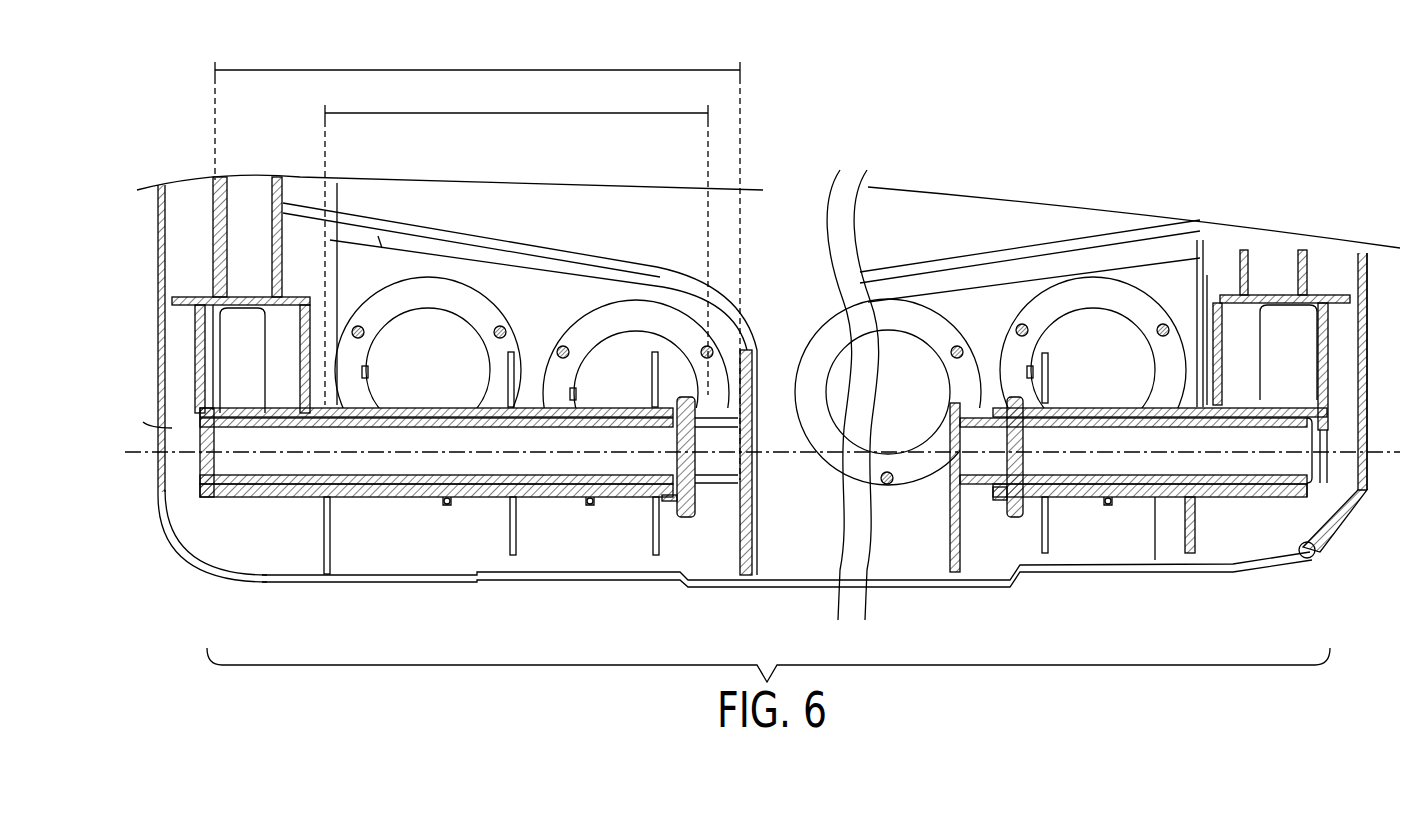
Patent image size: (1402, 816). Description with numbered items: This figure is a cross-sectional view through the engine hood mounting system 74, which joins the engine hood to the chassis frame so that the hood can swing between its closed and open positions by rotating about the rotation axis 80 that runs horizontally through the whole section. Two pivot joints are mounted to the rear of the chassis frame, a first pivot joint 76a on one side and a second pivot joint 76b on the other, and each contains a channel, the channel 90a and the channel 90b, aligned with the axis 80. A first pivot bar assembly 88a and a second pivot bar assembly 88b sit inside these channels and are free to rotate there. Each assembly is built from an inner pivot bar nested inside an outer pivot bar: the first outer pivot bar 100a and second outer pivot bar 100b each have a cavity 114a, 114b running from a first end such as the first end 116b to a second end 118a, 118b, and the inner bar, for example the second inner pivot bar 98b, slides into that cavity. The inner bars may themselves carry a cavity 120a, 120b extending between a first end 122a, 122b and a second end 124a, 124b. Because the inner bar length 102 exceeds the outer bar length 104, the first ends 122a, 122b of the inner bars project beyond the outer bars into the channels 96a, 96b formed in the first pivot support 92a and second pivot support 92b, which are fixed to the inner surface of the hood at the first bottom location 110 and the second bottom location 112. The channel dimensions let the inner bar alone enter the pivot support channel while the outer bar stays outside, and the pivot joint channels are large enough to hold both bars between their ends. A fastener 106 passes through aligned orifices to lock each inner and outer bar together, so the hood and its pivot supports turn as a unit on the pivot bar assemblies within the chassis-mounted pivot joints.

The engine hood mounting system 74 is at (1042, 88).
The first pivot joint 76a is at (514, 372).
The second pivot joint 76b is at (1050, 358).
The rotation axis 80 is at (145, 450).
The first pivot bar assembly 88a is at (465, 500).
The second pivot bar assembly 88b is at (1155, 497).
The channel of first pivot joint 90a is at (562, 446).
The channel of second pivot joint 90b is at (1107, 446).
The first pivot support 92a is at (242, 500).
The second pivot support 92b is at (1283, 492).
The channel of first pivot support 96a is at (237, 458).
The channel of second pivot support 96b is at (1273, 464).
The second inner pivot bar 98b is at (1227, 490).
The first outer pivot bar 100a is at (357, 500).
The second outer pivot bar 100b is at (1095, 500).
The length of inner pivot bar 102 is at (477, 67).
The length of outer pivot bar 104 is at (517, 112).
The fastener 106 is at (682, 520).
The first bottom location 110 is at (182, 507).
The second bottom location 112 is at (1342, 490).
The cavity of first outer pivot bar 114a is at (447, 462).
The cavity of second outer pivot bar 114b is at (1114, 463).
The first end of second outer pivot bar 116b is at (1210, 275).
The second end of first outer pivot bar 118a is at (317, 400).
The second end of second outer pivot bar 118b is at (993, 403).
The cavity of first inner pivot bar 120a is at (376, 448).
The cavity of second inner pivot bar 120b is at (1264, 445).
The first end of first inner pivot bar 122a is at (143, 422).
The first end of second inner pivot bar 122b is at (1308, 470).
The second end of first inner pivot bar 124a is at (752, 440).
The second end of second inner pivot bar 124b is at (943, 438).